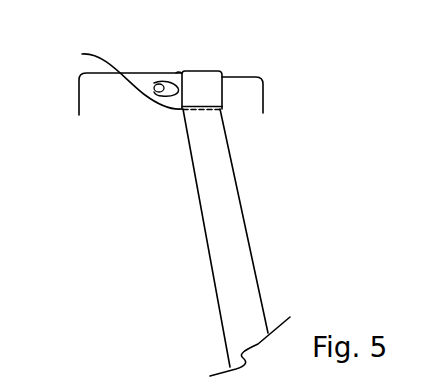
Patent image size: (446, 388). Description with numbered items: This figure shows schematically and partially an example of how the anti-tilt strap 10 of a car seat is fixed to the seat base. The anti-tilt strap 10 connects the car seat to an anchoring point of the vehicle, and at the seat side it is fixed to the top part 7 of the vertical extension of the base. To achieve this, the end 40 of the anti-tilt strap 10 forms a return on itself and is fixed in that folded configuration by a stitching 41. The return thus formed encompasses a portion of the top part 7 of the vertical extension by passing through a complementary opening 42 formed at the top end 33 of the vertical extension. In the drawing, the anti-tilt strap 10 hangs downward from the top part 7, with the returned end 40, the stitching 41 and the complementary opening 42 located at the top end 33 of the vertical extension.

The top part 7 is at (97, 99).
The anti-tilt strap 10 is at (232, 192).
The top end 33 is at (244, 77).
The end 40 is at (196, 78).
The stitching 41 is at (120, 77).
The complementary opening 42 is at (154, 82).